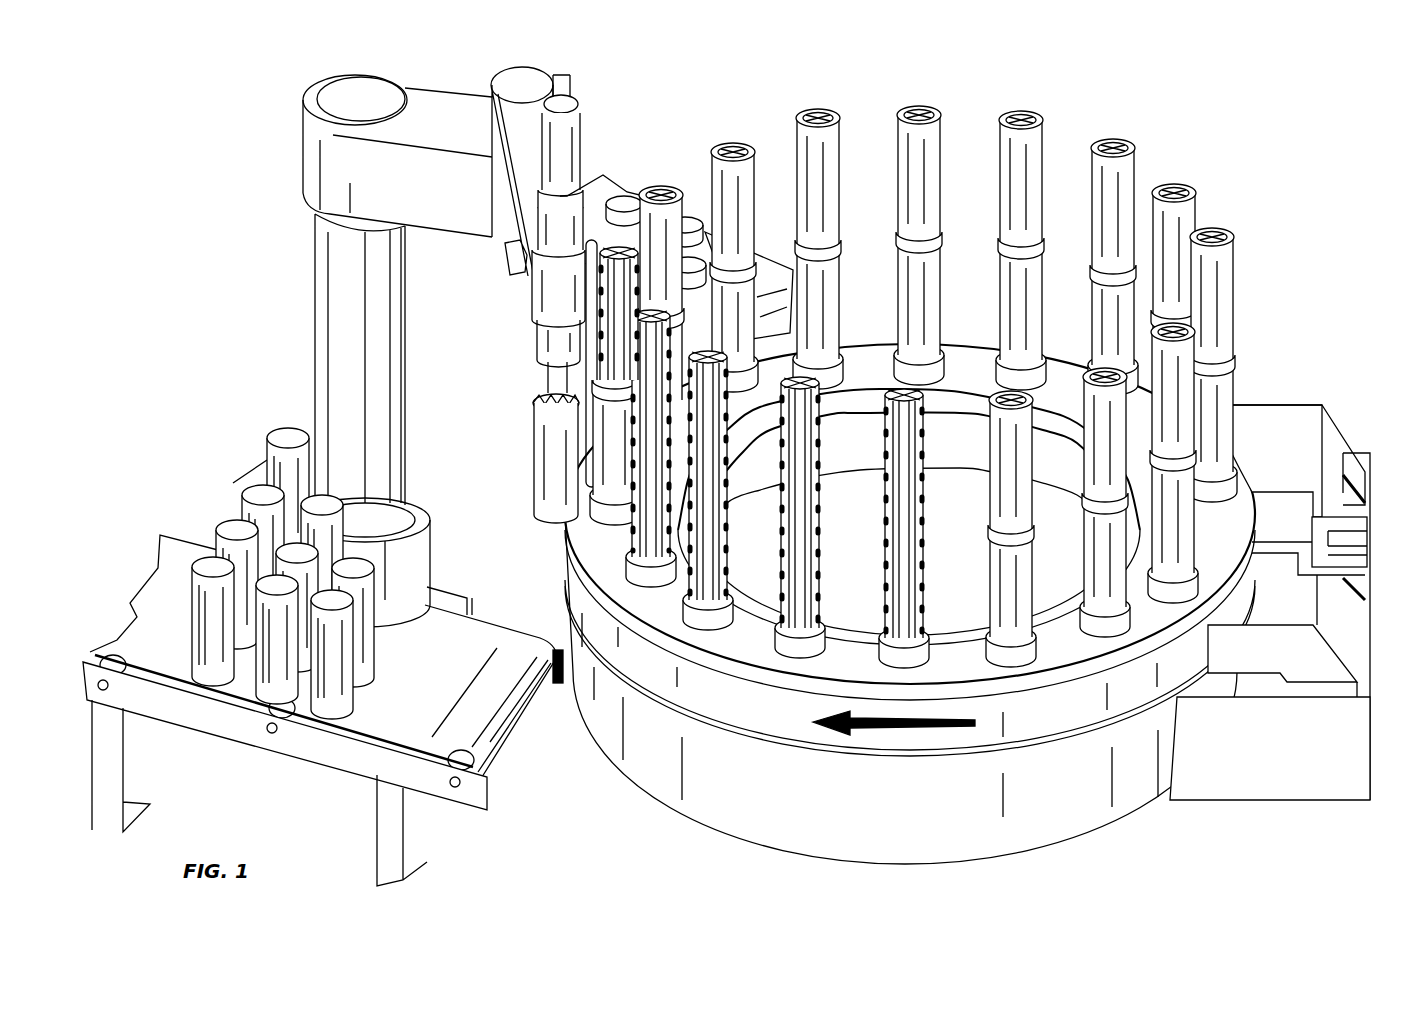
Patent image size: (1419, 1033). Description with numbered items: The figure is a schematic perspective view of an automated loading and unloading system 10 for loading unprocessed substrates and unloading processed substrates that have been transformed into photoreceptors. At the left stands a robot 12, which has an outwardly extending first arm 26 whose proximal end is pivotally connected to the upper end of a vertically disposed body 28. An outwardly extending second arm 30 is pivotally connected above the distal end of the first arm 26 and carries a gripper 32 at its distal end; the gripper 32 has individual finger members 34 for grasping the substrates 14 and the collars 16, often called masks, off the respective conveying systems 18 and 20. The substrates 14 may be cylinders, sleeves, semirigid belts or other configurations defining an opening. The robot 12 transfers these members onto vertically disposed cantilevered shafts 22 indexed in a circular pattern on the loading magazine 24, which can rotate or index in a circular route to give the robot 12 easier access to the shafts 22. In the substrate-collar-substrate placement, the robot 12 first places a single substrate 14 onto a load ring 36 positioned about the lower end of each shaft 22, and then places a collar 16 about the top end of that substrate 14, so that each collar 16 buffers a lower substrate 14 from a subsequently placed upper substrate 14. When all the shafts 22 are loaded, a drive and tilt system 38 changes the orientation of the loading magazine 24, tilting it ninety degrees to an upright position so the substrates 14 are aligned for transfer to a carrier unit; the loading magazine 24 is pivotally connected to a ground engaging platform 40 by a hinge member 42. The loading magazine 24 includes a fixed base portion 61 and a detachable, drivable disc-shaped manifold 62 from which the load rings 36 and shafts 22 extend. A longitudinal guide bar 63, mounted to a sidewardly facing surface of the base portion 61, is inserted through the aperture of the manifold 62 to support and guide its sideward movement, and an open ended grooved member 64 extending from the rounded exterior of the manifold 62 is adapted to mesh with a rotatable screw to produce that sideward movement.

The automated loading and unloading system 10 is at (927, 503).
The robot 12 is at (360, 347).
The substrates 14 is at (793, 143).
The collars 16 is at (693, 217).
The conveying system 18 is at (163, 506).
The conveying system 20 is at (676, 210).
The cantilevered shafts 22 is at (723, 550).
The loading magazine 24 is at (870, 583).
The first arm 26 is at (443, 126).
The body 28 is at (315, 335).
The second arm 30 is at (512, 193).
The gripper 32 is at (550, 290).
The finger members 34 is at (537, 403).
The load ring 36 is at (997, 362).
The drive and tilt system 38 is at (1270, 632).
The ground engaging platform 40 is at (740, 798).
The hinge member 42 is at (1346, 582).
The base portion 61 is at (797, 712).
The manifold 62 is at (1047, 684).
The guide bar 63 is at (586, 427).
The grooved member 64 is at (1353, 453).